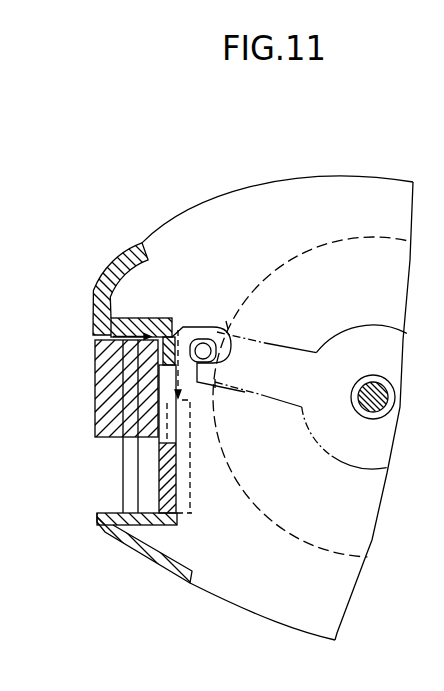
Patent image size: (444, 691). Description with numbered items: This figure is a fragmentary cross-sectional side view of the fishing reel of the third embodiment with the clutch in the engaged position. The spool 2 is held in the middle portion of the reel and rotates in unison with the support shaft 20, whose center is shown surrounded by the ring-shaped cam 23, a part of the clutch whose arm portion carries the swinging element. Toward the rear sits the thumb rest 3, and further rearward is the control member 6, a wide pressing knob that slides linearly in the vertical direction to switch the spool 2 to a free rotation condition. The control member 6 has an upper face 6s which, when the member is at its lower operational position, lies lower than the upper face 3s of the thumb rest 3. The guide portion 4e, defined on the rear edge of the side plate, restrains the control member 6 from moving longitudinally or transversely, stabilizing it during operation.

The spool 2 is at (290, 258).
The thumb rest 3 is at (193, 515).
The upper face of thumb rest 3s is at (181, 330).
The guide portion 4e is at (123, 472).
The control member 6 is at (95, 388).
The upper face of control member 6s is at (113, 327).
The support shaft 20 is at (370, 419).
The ring-shaped cam 23 is at (383, 325).